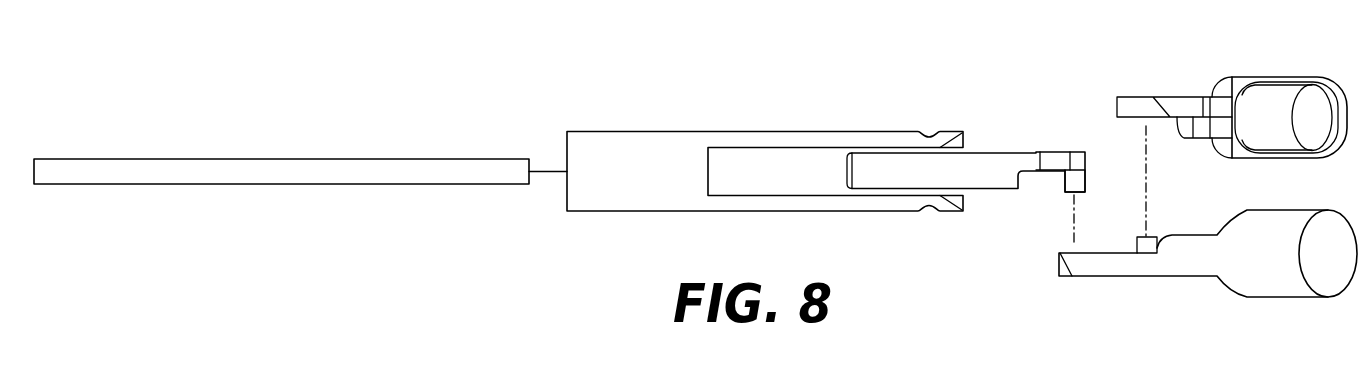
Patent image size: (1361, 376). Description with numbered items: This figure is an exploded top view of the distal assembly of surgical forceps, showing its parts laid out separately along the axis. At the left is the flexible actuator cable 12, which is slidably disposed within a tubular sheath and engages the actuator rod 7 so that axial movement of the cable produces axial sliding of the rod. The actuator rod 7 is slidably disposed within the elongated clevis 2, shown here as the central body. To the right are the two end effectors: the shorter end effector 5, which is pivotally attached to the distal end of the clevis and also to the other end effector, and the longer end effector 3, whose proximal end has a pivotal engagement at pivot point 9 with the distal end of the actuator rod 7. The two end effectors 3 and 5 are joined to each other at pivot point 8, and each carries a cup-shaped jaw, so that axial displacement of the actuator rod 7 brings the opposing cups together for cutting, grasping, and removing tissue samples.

The actuator cable 12 is at (316, 170).
The clevis 2 is at (674, 143).
The actuator rod 7 is at (990, 170).
The pivot point 9 is at (1070, 193).
The end effector 5 is at (1222, 103).
The end effector 3 is at (1198, 268).
The pivot point 8 is at (1148, 247).